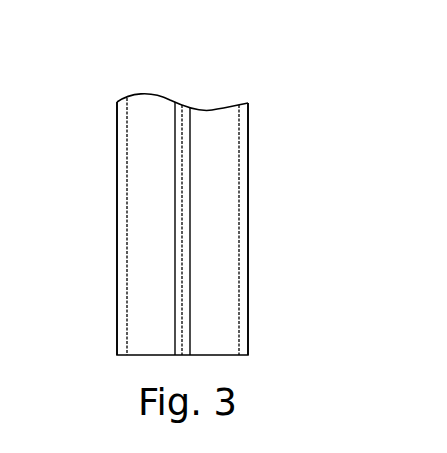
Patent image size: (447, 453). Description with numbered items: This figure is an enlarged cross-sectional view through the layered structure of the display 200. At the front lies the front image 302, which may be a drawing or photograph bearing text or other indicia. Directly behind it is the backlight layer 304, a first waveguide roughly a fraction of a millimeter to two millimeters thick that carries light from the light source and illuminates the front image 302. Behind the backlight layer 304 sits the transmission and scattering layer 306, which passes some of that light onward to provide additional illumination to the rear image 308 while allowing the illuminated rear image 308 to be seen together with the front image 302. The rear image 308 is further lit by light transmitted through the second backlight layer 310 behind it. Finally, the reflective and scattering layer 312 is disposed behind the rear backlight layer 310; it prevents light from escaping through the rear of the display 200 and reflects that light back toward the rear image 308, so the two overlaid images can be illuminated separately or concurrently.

The display 200 is at (152, 68).
The front image 302 is at (117, 222).
The backlight layer 304 is at (135, 288).
The transmission and scattering layer 306 is at (181, 113).
The rear image 308 is at (187, 182).
The second backlight layer 310 is at (231, 288).
The reflective and scattering layer 312 is at (248, 223).